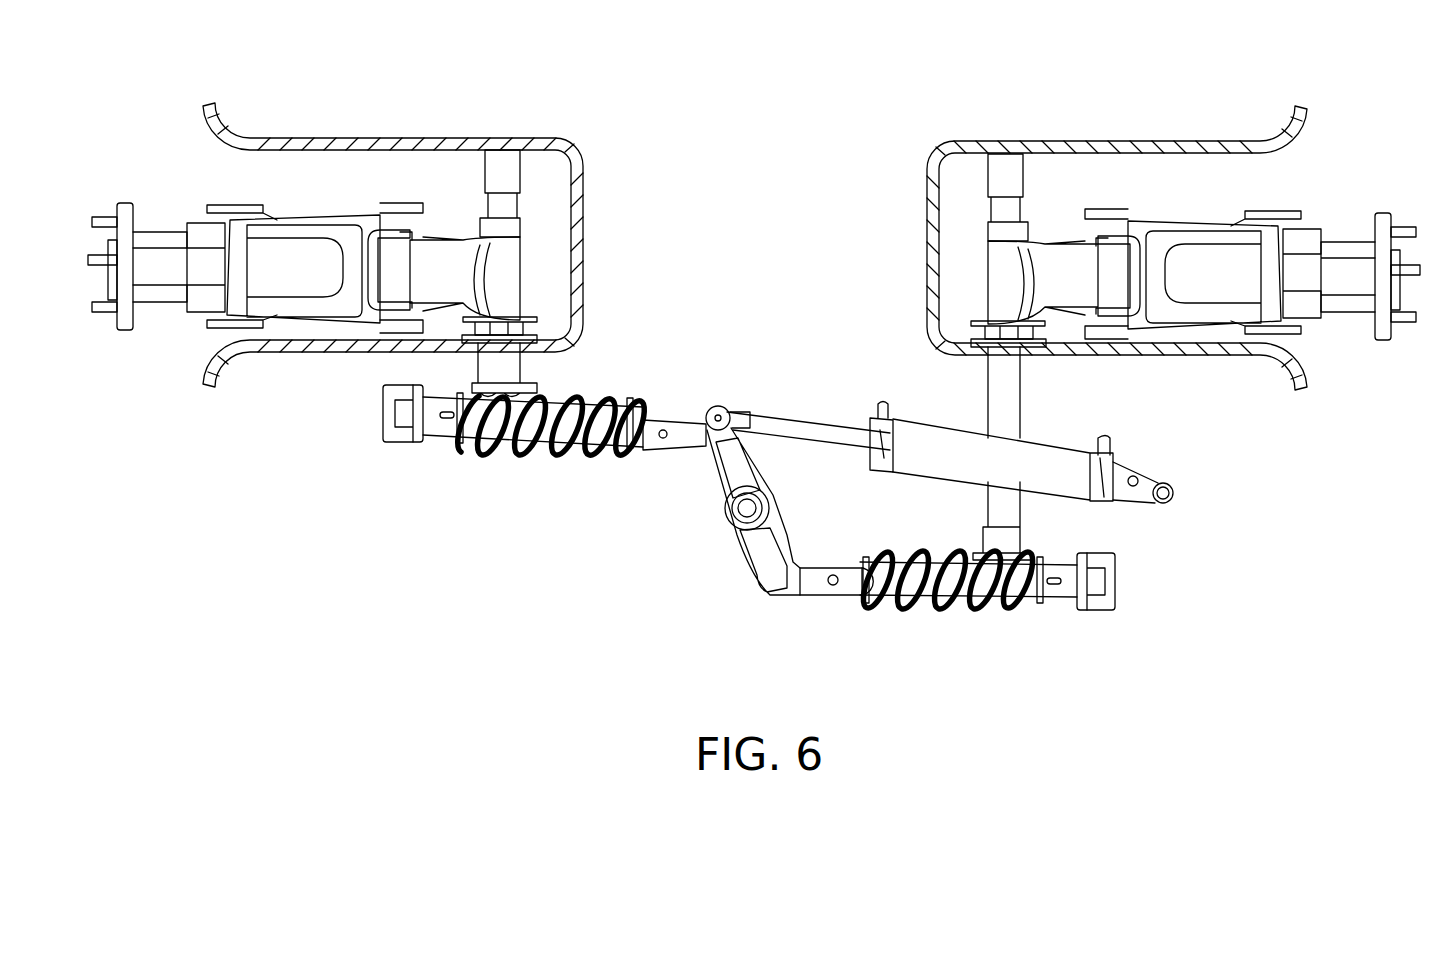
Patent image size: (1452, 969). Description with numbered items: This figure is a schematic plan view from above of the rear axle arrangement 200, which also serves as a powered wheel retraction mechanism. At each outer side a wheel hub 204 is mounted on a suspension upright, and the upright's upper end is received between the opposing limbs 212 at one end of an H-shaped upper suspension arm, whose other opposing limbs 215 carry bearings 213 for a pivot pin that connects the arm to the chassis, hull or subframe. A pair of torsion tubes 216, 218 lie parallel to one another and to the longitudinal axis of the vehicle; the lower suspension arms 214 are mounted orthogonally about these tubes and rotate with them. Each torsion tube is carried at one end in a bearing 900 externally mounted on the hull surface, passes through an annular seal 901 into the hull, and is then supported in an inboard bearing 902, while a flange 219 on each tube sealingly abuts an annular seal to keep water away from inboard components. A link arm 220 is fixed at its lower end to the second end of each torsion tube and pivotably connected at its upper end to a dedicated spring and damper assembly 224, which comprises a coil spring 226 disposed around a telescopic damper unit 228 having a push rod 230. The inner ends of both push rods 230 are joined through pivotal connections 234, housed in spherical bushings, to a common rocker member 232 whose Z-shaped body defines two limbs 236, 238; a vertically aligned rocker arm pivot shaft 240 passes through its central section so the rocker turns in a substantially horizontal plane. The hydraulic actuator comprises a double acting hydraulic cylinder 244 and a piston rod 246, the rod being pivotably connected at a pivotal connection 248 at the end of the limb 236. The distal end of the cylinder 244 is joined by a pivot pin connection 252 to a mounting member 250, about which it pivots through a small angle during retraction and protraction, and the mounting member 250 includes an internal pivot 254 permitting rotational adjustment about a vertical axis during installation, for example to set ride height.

The rear axle arrangement 200 is at (663, 109).
The wheel hub 204 is at (118, 203).
The opposing limbs 212 is at (240, 225).
The bearings 213 is at (445, 188).
The lower suspension arm 214 is at (428, 285).
The opposing limbs 215 is at (367, 222).
The torsion tube 216 is at (532, 204).
The torsion tube 218 is at (978, 207).
The flange 219 is at (527, 321).
The link arm 220 is at (400, 443).
The spring and damper assembly 224 is at (540, 462).
The coil spring 226 is at (578, 397).
The telescopic damper unit 228 is at (477, 482).
The push rod 230 is at (598, 398).
The rocker member 232 is at (795, 525).
The pivotal connection 234 is at (663, 440).
The limb 236 is at (776, 413).
The limb 238 is at (760, 567).
The rocker arm pivot shaft 240 is at (740, 522).
The double acting hydraulic cylinder 244 is at (1070, 485).
The piston rod 246 is at (828, 427).
The pivotal connection 248 is at (726, 410).
The mounting member 250 is at (1178, 494).
The pivot pin connection 252 is at (1138, 478).
The internal pivot 254 is at (1170, 484).
The bearing 900 is at (502, 157).
The annular seal 901 is at (470, 347).
The bearing 902 is at (528, 385).